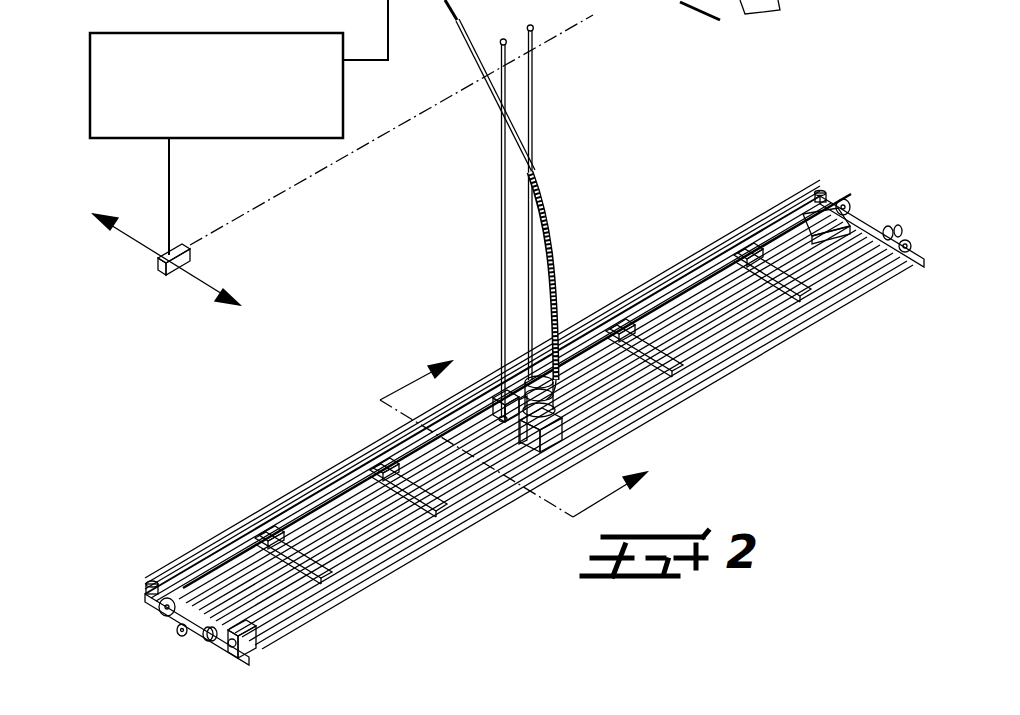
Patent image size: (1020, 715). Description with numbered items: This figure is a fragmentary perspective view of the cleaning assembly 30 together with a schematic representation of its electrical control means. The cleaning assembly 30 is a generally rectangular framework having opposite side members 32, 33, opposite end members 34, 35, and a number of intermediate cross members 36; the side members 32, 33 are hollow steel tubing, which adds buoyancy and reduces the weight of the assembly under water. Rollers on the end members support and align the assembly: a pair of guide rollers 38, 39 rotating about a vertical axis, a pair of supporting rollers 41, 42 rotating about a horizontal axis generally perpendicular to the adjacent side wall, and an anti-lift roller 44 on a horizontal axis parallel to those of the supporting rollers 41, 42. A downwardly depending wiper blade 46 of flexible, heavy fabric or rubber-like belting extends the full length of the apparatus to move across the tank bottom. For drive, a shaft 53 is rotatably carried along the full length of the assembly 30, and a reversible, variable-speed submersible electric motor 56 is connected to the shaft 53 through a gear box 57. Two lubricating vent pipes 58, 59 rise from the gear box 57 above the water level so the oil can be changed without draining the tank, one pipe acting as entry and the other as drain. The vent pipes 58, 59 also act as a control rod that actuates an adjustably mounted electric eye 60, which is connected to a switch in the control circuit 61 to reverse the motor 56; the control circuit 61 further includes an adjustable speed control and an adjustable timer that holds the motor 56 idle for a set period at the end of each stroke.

The cleaning assembly 30 is at (522, 349).
The side member 32 is at (750, 350).
The side member 33 is at (700, 284).
The end member 34 is at (178, 626).
The end member 35 is at (852, 230).
The intermediate cross members 36 is at (294, 542).
The guide roller 38 is at (254, 646).
The guide roller 39 is at (153, 588).
The supporting roller 41 is at (208, 638).
The supporting roller 42 is at (158, 606).
The anti-lift roller 44 is at (178, 638).
The wiper blade 46 is at (366, 546).
The shaft 53 is at (340, 496).
The submersible electric motor 56 is at (566, 414).
The gear box 57 is at (507, 398).
The lubricating vent pipe 58 is at (498, 206).
The lubricating vent pipe 59 is at (534, 176).
The electric eye 60 is at (177, 244).
The control circuit 61 is at (238, 33).